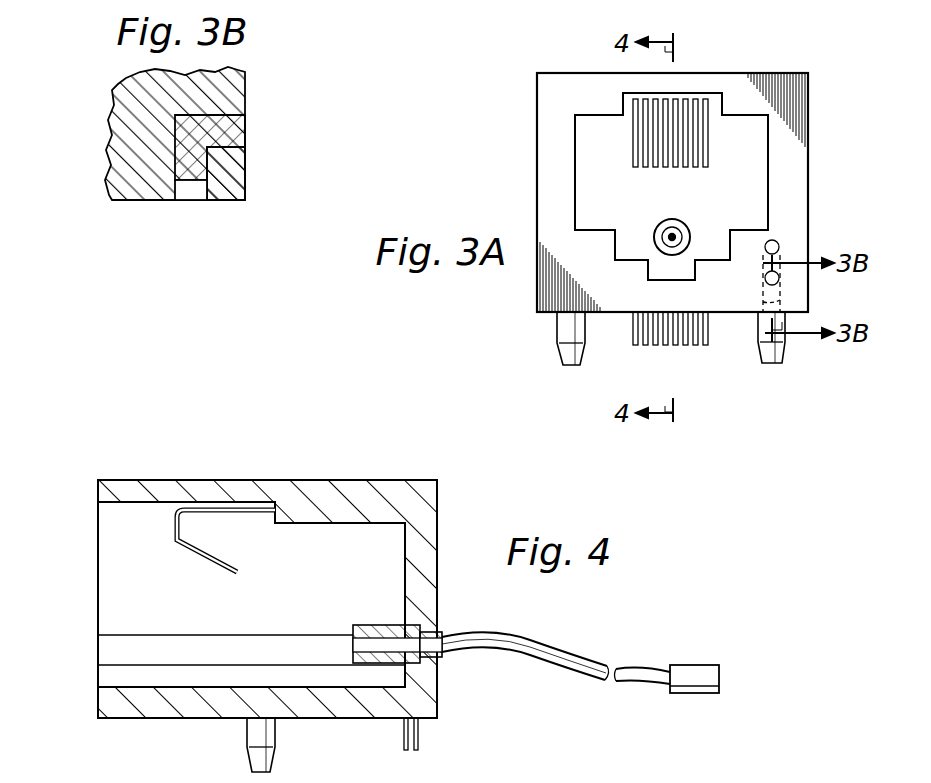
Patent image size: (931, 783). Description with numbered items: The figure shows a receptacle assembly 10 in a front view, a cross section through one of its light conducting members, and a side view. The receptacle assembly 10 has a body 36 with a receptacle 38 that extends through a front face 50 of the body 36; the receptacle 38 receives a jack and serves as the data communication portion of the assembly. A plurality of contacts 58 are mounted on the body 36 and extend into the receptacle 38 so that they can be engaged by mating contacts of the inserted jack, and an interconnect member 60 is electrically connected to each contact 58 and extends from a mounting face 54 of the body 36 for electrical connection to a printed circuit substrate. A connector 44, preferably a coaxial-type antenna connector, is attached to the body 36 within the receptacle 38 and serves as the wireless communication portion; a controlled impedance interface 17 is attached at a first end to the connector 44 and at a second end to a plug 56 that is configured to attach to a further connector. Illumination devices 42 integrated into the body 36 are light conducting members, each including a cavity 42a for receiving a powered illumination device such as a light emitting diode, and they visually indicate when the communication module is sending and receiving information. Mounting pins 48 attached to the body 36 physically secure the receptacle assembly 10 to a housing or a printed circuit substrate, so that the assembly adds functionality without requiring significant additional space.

In FIG. 3A, the receptacle assembly 10 is at (572, 54).
In FIG. 4, the receptacle assembly 10 is at (150, 453).
In FIG. 4, the controlled impedance interface 17 is at (540, 634).
In FIG. 3B, the body 36 is at (116, 123).
In FIG. 3A, the body 36 is at (814, 138).
In FIG. 4, the body 36 is at (328, 475).
In FIG. 3A, the receptacle 38 is at (758, 192).
In FIG. 4, the receptacle 38 is at (88, 591).
In FIG. 3B, the illumination devices 42 is at (232, 133).
In FIG. 3A, the illumination devices 42 is at (779, 243).
In FIG. 3B, the cavity 42a is at (190, 195).
In FIG. 3A, the cavity 42a is at (780, 300).
In FIG. 3A, the connector 44 is at (676, 220).
In FIG. 4, the connector 44 is at (372, 625).
In FIG. 3A, the mounting pins 48 is at (570, 367).
In FIG. 4, the mounting pins 48 is at (247, 745).
In FIG. 3A, the front face 50 is at (537, 136).
In FIG. 4, the front face 50 is at (97, 525).
In FIG. 3A, the mounting face 54 is at (546, 322).
In FIG. 4, the mounting face 54 is at (128, 720).
In FIG. 4, the plug 56 is at (697, 665).
In FIG. 3A, the contacts 58 is at (647, 168).
In FIG. 4, the contacts 58 is at (197, 555).
In FIG. 3A, the interconnect member 60 is at (640, 347).
In FIG. 4, the interconnect member 60 is at (404, 738).